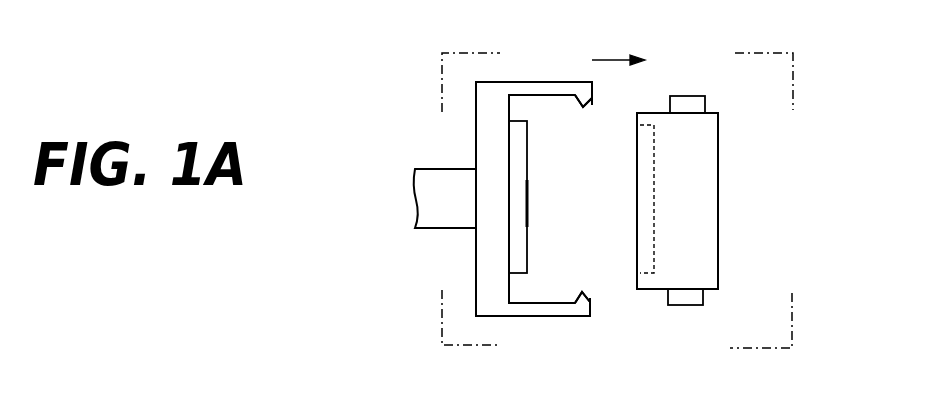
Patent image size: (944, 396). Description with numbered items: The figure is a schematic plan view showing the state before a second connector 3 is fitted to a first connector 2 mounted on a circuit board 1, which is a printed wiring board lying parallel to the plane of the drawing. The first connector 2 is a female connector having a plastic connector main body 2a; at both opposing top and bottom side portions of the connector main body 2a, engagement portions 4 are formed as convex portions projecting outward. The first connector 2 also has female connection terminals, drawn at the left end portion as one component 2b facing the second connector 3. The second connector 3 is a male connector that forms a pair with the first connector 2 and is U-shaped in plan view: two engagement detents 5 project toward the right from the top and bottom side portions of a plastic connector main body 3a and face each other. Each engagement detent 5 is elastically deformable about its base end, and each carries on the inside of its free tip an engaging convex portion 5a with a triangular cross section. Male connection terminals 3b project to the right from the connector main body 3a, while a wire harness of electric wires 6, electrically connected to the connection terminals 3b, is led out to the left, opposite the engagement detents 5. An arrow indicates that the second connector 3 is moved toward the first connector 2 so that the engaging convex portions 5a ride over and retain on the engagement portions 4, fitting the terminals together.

The circuit board 1 is at (770, 57).
The first connector 2 is at (718, 113).
The connector main body 2a is at (710, 198).
The inner contact of plug 2b is at (637, 200).
The second connector 3 is at (477, 82).
The connector main body 3a is at (490, 139).
The connection terminals 3b is at (530, 198).
The engagement portions 4 is at (688, 96).
The engagement detents 5 is at (546, 82).
The engaging convex portion 5a is at (585, 109).
The electric wires 6 is at (436, 228).